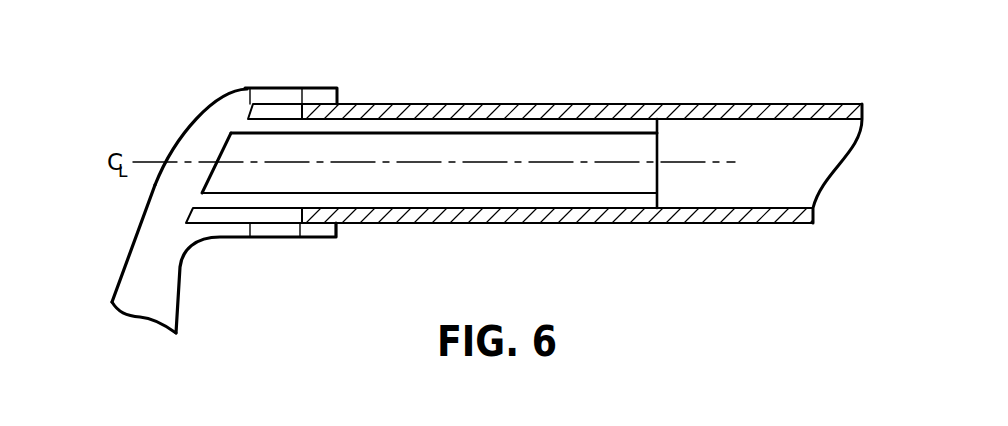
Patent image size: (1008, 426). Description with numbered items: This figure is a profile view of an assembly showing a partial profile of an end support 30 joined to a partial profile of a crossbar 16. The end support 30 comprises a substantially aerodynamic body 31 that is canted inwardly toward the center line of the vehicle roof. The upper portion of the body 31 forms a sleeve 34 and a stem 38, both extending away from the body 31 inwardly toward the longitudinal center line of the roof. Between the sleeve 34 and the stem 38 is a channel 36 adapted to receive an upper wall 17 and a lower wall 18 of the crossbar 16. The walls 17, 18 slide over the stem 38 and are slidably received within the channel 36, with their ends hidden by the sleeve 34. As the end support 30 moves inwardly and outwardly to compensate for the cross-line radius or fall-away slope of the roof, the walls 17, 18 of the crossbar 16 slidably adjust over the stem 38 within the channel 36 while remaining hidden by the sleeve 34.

The crossbar 16 is at (813, 120).
The upper wall 17 is at (512, 108).
The lower wall 18 is at (592, 213).
The end support 30 is at (155, 112).
The body 31 is at (137, 278).
The sleeve 34 is at (317, 97).
The channel 36 is at (273, 108).
The stem 38 is at (427, 152).